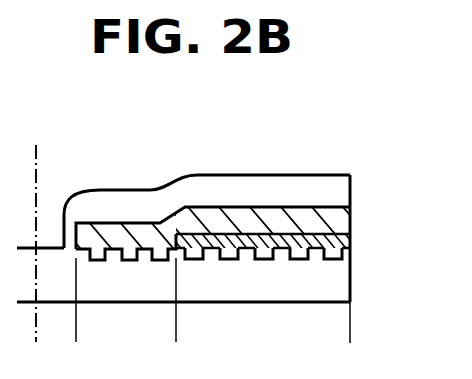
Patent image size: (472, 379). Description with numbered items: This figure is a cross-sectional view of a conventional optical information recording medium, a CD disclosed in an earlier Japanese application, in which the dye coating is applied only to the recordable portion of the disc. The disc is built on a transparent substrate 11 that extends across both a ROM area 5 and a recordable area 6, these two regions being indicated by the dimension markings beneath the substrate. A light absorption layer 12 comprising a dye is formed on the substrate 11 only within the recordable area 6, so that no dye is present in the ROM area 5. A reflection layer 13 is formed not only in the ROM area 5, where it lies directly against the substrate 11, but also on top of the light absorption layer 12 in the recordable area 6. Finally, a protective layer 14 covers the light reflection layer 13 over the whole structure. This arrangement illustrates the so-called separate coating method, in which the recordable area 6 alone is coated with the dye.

The transparent substrate 11 is at (350, 284).
The light absorption layer 12 is at (352, 242).
The reflection layer 13 is at (342, 218).
The protective layer 14 is at (313, 182).
The ROM area 5 is at (175, 329).
The recordable area 6 is at (349, 329).